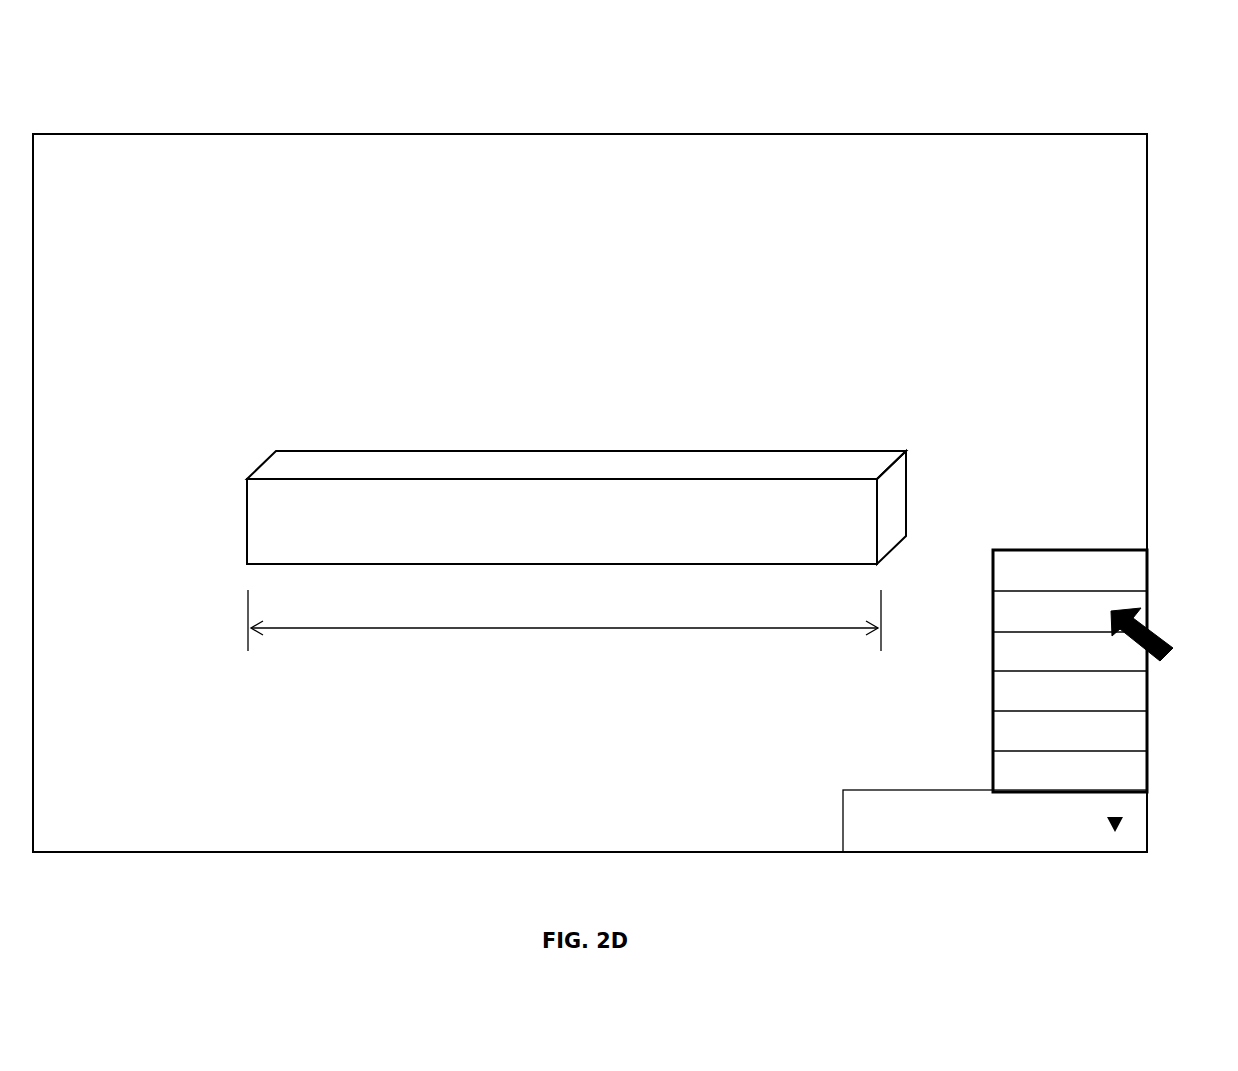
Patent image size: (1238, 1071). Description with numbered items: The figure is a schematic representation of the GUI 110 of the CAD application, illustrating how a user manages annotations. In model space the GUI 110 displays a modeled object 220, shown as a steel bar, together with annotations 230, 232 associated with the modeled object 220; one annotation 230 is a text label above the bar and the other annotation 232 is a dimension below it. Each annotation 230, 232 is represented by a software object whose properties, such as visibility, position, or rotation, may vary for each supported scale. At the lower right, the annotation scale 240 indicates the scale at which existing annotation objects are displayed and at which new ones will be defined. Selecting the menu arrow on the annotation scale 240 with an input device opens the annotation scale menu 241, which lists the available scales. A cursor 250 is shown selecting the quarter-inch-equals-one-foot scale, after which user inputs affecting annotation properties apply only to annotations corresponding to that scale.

The GUI 110 is at (1090, 135).
The modeled object 220 is at (898, 450).
The annotation 230 is at (530, 353).
The annotation 232 is at (512, 686).
The annotation scale 240 is at (866, 790).
The annotation scale menu 241 is at (1105, 550).
The cursor 250 is at (1163, 635).